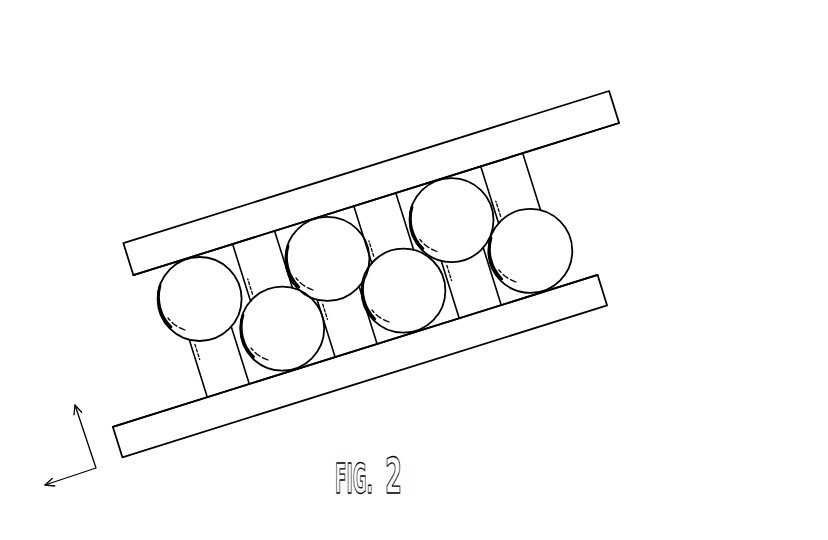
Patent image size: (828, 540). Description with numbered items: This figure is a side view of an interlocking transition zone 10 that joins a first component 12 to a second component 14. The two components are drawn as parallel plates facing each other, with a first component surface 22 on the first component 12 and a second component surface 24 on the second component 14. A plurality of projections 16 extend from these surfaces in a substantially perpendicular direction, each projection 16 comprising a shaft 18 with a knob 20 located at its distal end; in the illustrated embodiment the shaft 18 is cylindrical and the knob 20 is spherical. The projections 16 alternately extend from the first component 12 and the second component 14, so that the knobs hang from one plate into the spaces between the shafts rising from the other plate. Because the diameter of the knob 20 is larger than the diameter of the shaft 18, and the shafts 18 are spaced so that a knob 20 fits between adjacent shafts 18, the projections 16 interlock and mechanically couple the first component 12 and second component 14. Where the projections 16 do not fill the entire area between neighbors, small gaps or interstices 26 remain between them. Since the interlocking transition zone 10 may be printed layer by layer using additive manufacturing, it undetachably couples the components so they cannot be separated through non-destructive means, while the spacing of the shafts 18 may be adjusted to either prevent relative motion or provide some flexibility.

The interlocking transition zone 10 is at (664, 83).
The first component 12 is at (468, 332).
The second component 14 is at (490, 150).
The projection 16 is at (572, 240).
The shaft 18 is at (223, 374).
The knob 20 is at (185, 312).
The first component surface 22 is at (587, 274).
The second component surface 24 is at (564, 141).
The interstice 26 is at (484, 182).